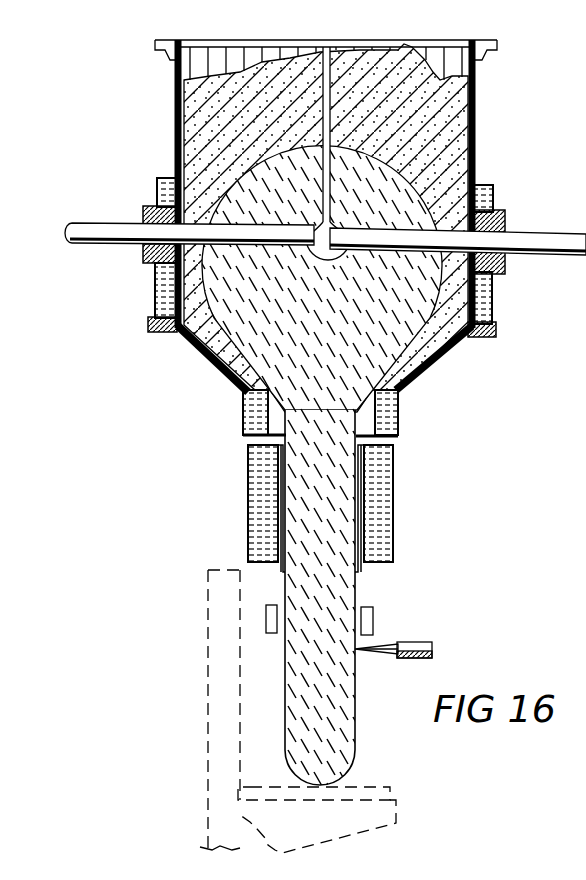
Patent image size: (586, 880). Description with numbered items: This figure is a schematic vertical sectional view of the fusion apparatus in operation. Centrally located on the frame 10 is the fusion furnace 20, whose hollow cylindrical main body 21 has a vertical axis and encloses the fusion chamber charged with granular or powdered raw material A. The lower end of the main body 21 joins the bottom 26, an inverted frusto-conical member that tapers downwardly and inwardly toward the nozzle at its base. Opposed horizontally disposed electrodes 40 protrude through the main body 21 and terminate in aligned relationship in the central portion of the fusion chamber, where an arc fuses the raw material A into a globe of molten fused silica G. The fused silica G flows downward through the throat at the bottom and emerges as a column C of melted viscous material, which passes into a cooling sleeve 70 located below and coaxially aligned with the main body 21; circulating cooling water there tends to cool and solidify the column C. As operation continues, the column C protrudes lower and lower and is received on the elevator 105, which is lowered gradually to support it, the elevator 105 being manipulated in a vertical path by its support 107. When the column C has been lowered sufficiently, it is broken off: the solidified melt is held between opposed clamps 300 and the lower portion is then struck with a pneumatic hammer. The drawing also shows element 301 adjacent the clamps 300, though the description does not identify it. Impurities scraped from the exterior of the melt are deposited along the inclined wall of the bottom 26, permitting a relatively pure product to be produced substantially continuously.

The raw material A is at (400, 60).
The frame 10 is at (484, 157).
The fusion furnace 20 is at (176, 86).
The main body 21 is at (474, 117).
The bottom 26 is at (224, 364).
The electrodes 40 is at (122, 228).
The fused silica G is at (366, 205).
The cooling sleeve 70 is at (248, 474).
The column C is at (348, 743).
The clamps 300 is at (370, 617).
The pointer probe 301 is at (414, 648).
The support 107 is at (212, 712).
The elevator 105 is at (358, 793).